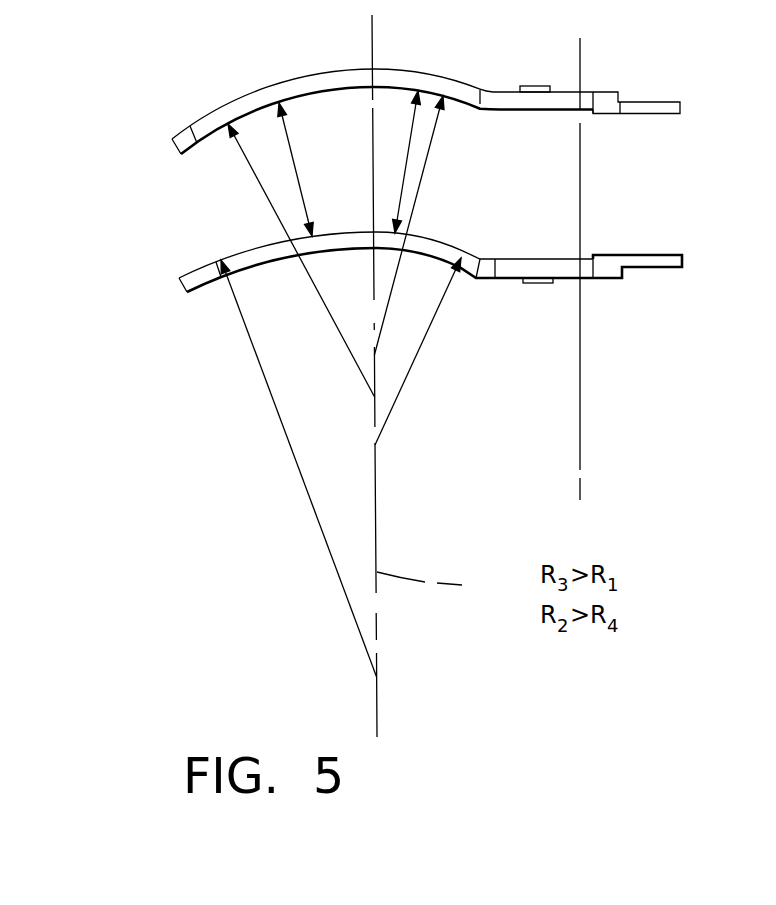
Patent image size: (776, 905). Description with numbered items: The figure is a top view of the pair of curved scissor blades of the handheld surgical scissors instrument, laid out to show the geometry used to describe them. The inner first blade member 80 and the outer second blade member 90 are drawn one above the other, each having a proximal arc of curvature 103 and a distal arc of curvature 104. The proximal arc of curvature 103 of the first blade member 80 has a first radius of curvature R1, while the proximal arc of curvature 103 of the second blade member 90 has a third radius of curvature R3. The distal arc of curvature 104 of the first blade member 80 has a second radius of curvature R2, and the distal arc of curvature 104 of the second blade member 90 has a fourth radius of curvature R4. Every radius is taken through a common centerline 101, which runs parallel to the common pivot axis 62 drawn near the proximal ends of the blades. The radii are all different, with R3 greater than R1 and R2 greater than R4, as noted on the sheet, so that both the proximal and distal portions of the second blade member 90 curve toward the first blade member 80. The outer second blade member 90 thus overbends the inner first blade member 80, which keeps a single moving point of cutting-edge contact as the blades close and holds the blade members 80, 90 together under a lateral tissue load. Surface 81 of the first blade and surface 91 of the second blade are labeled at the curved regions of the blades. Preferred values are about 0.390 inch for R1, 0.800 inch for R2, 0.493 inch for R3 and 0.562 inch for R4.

The common pivot axis 62 is at (580, 443).
The first blade member 80 is at (368, 280).
The convex surface of first vane 81 is at (437, 238).
The second blade member 90 is at (363, 125).
The concave surface of second vane 91 is at (306, 90).
The common centerline 101 is at (372, 42).
The proximal arc of curvature 103 is at (408, 140).
The distal arc of curvature 104 is at (294, 165).
The first radius of curvature R1 is at (420, 350).
The second radius of curvature R2 is at (287, 444).
The third radius of curvature R3 is at (423, 168).
The fourth radius of curvature R4 is at (265, 202).